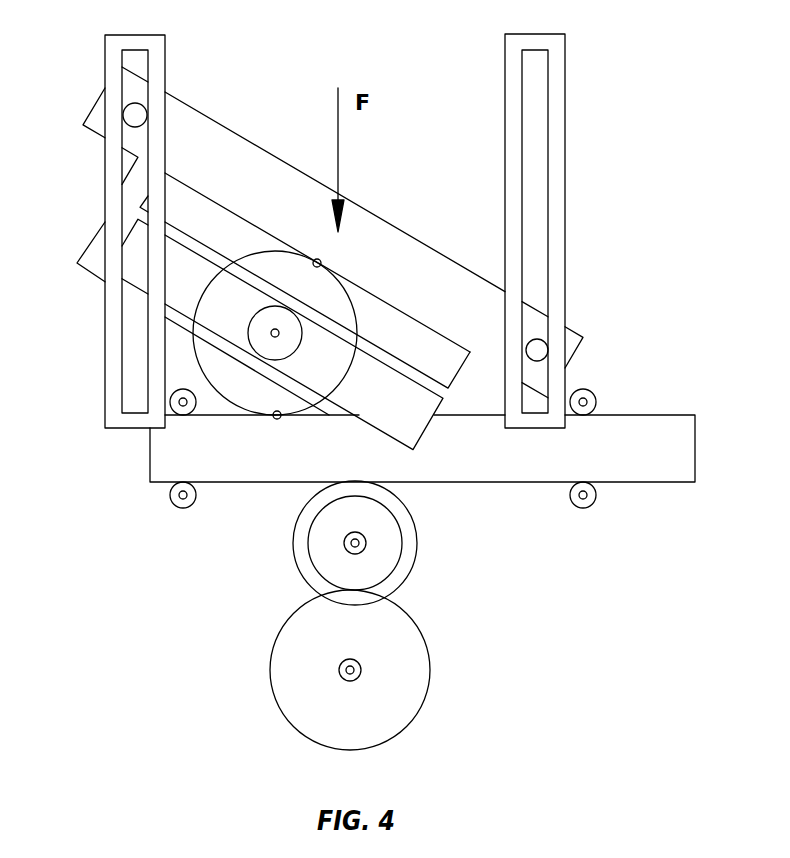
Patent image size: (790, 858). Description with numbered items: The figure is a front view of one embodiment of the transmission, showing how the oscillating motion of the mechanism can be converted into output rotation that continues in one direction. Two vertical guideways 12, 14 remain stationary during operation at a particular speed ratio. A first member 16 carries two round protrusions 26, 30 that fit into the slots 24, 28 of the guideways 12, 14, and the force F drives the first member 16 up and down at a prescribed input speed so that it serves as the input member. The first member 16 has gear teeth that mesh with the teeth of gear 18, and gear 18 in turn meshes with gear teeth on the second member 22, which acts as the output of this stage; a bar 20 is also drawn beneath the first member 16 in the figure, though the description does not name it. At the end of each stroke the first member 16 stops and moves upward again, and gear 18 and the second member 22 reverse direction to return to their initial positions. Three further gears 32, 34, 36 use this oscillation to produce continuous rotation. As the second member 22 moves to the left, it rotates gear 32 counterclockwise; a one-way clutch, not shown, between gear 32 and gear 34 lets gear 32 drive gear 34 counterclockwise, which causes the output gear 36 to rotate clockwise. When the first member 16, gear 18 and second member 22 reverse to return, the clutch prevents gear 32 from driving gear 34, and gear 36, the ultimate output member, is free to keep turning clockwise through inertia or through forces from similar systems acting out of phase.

The guideway 12 is at (565, 97).
The guideway 14 is at (165, 47).
The first member 16 is at (373, 213).
The gear 18 is at (357, 313).
The support bar 20 is at (332, 392).
The second member 22 is at (646, 458).
The slot 24 is at (537, 243).
The round protrusion 26 is at (546, 346).
The slot 28 is at (132, 62).
The round protrusion 30 is at (124, 117).
The gear 32 is at (408, 577).
The gear 34 is at (402, 528).
The output gear 36 is at (282, 632).